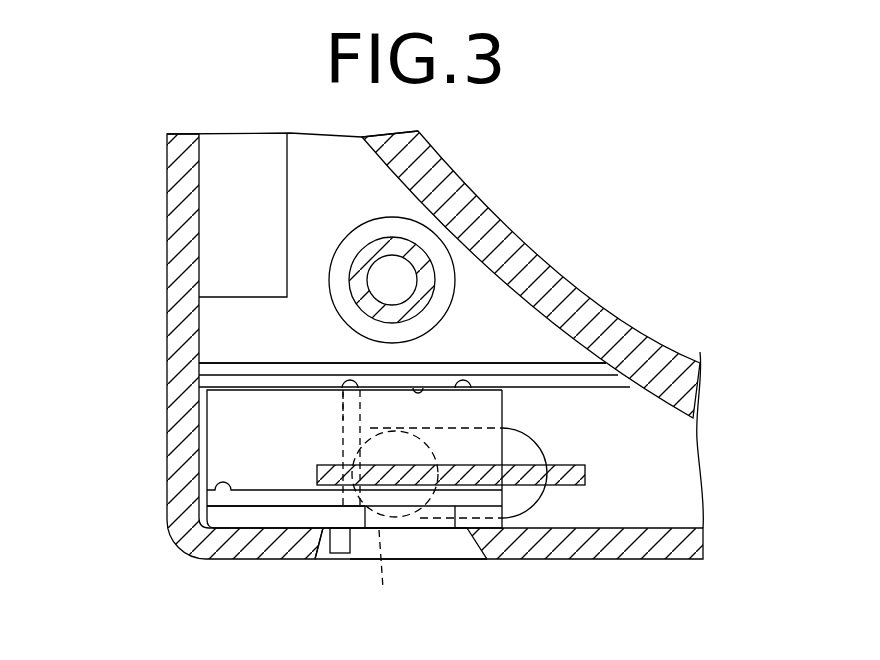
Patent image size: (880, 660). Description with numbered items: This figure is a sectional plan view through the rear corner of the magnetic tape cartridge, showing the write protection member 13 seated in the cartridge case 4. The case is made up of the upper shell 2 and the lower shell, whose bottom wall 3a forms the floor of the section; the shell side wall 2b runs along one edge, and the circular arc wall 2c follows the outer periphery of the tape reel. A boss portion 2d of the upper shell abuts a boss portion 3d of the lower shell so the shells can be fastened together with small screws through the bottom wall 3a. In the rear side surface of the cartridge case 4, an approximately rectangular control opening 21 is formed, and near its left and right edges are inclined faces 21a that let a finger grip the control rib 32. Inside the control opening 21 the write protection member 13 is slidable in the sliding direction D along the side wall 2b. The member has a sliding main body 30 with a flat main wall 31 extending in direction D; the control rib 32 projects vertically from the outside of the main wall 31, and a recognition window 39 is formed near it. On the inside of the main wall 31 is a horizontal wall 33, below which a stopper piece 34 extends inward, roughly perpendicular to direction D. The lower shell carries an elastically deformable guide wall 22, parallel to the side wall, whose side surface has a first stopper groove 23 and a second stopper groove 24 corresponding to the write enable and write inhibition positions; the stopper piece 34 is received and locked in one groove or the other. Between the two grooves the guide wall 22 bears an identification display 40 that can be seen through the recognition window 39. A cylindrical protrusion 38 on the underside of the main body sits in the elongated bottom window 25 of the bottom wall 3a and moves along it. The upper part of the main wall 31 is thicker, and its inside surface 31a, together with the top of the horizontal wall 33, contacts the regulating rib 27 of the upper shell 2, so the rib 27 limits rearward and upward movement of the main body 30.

The upper shell 2 is at (167, 208).
The side wall 2b is at (178, 333).
The circular arc wall 2c is at (540, 258).
The boss portion 2d is at (372, 248).
The bottom wall 3a is at (682, 440).
The boss portion 3d is at (345, 273).
The cartridge case 4 is at (167, 132).
The write protection member 13 is at (413, 531).
The control opening 21 is at (457, 533).
The inclined face 21a is at (315, 550).
The guide wall 22 is at (262, 365).
The first vertical stopper groove 23 is at (345, 385).
The second vertical stopper groove 24 is at (470, 378).
The bottom window 25 is at (537, 445).
The regulating rib 27 is at (577, 473).
The sliding main body 30 is at (212, 415).
The main wall 31 is at (263, 518).
The inside surface 31a is at (212, 488).
The control rib 32 is at (342, 553).
The horizontal wall 33 is at (212, 458).
The stopper piece 34 is at (343, 400).
The cylindrical protrusion 38 is at (375, 437).
The recognition window 39 is at (384, 571).
The identification display 40 is at (428, 387).
The sliding direction D is at (513, 402).